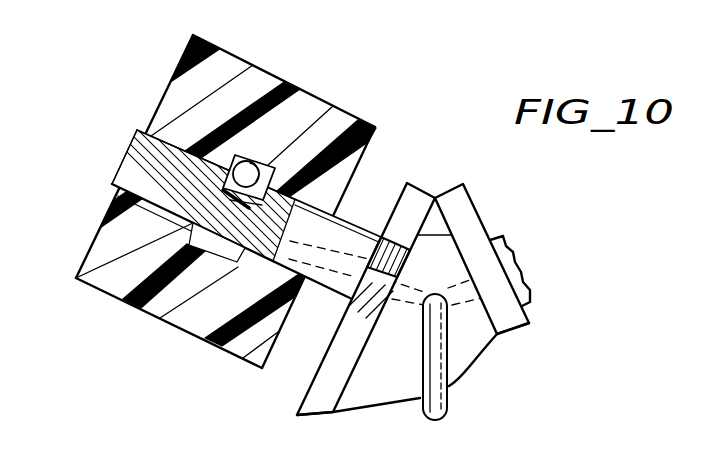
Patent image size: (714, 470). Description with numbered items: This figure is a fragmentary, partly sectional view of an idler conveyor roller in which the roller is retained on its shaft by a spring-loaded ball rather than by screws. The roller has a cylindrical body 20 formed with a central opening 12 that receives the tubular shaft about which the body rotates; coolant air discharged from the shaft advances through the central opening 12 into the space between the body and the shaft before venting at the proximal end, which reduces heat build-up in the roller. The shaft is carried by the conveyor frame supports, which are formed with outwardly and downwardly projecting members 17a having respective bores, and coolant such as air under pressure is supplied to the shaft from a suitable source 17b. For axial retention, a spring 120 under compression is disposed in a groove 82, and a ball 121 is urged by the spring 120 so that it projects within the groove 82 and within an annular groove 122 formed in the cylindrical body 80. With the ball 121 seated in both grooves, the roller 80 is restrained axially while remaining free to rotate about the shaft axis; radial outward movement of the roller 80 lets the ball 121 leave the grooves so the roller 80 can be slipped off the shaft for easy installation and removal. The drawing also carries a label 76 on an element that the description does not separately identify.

The cylindrical body 20 is at (364, 122).
The cylindrical body 80 is at (207, 82).
The central opening 12 is at (125, 180).
The clamp member 76 is at (140, 147).
The spring 120 is at (194, 132).
The ball 121 is at (253, 154).
The groove 82 is at (276, 168).
The annular groove 122 is at (237, 257).
The outwardly and downwardly projecting members 17a is at (424, 197).
The source of coolant 17b is at (448, 397).